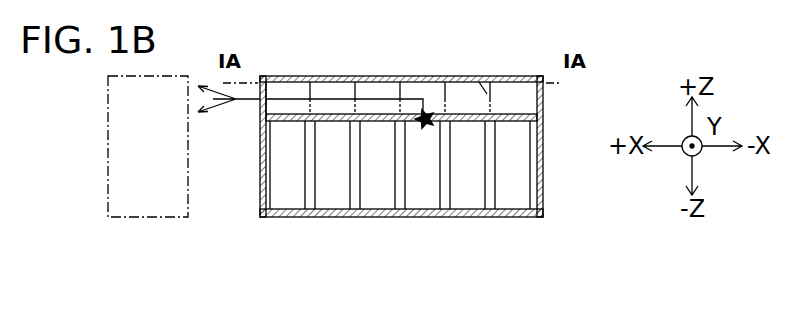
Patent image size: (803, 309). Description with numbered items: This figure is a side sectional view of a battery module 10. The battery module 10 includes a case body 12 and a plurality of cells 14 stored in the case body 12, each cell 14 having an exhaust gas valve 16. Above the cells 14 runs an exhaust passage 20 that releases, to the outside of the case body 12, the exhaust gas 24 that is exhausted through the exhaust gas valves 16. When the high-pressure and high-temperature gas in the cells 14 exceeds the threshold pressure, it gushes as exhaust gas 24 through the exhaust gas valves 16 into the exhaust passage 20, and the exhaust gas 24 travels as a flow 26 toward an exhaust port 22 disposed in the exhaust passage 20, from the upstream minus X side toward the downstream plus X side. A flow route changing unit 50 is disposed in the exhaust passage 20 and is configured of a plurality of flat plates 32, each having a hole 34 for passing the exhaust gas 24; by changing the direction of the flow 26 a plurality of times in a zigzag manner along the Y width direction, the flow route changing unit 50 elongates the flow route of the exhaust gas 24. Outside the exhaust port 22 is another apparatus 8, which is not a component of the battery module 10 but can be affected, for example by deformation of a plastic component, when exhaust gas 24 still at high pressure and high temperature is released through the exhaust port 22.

The apparatus 8 is at (158, 157).
The battery module 10 is at (256, 238).
The case body 12 is at (515, 217).
The cells 14 is at (515, 172).
The exhaust gas valve 16 is at (515, 113).
The exhaust passage 20 is at (511, 88).
The exhaust port 22 is at (254, 101).
The exhaust gas 24 is at (428, 104).
The flow 26 is at (331, 93).
The flat plates 32 is at (467, 22).
The hole 34 is at (286, 4).
The flow route changing unit 50 is at (485, 88).